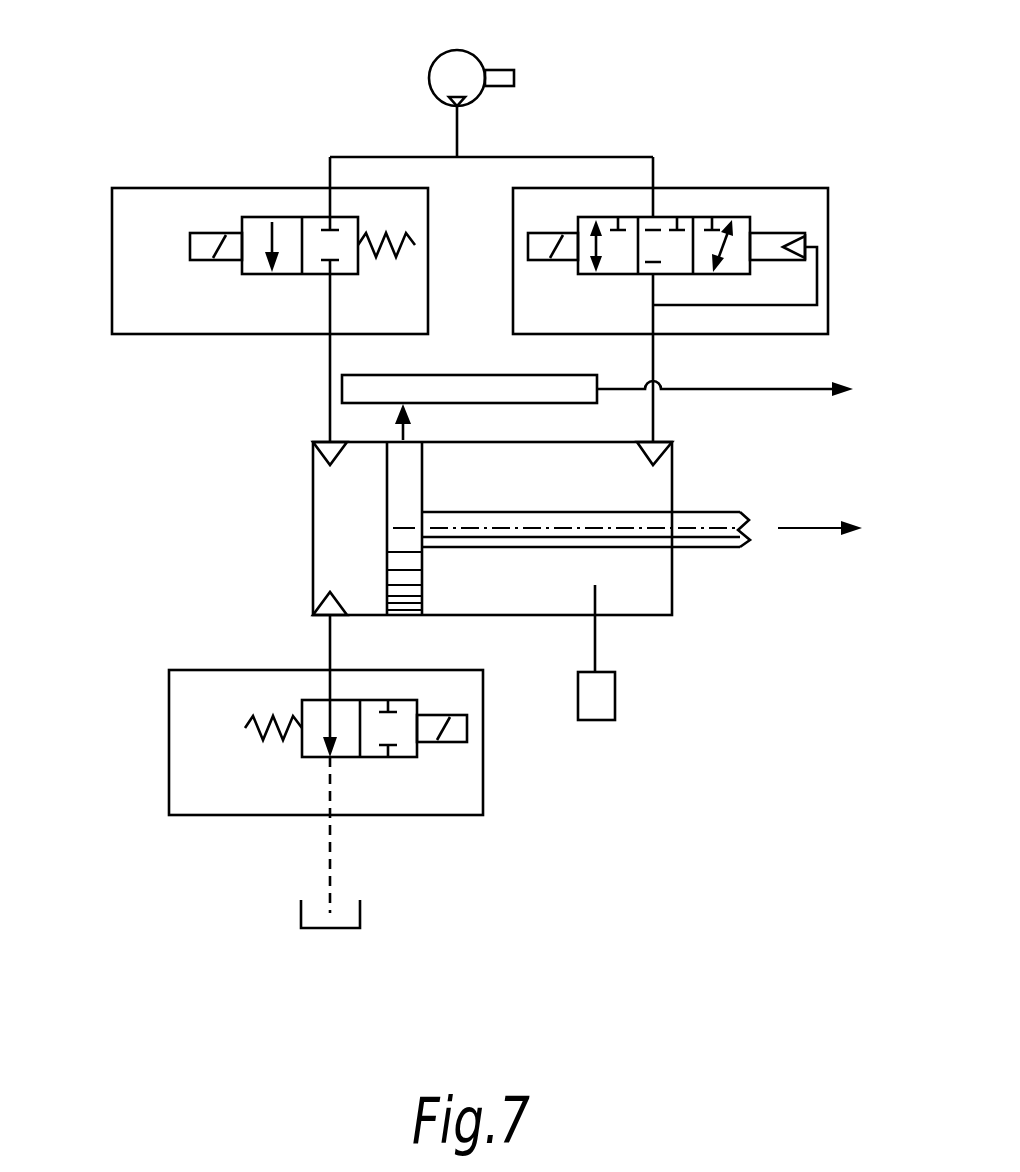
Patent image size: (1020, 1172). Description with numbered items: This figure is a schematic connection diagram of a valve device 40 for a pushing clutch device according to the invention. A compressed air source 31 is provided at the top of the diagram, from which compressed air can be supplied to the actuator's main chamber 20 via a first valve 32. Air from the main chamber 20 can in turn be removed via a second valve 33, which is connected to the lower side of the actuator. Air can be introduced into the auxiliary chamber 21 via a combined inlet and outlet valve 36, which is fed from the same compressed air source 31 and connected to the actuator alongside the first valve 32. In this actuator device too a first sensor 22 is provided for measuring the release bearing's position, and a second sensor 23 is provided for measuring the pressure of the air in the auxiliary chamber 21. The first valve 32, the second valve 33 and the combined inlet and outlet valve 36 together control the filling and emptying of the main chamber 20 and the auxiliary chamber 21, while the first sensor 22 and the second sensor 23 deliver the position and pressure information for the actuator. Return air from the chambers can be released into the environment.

The valve device 40 is at (768, 126).
The compressed air source 31 is at (447, 70).
The first valve 32 is at (130, 215).
The combined inlet and outlet valve 36 is at (805, 210).
The first sensor 22 is at (345, 390).
The main chamber 20 is at (345, 530).
The auxiliary chamber 21 is at (655, 488).
The second sensor 23 is at (600, 695).
The second valve 33 is at (190, 720).